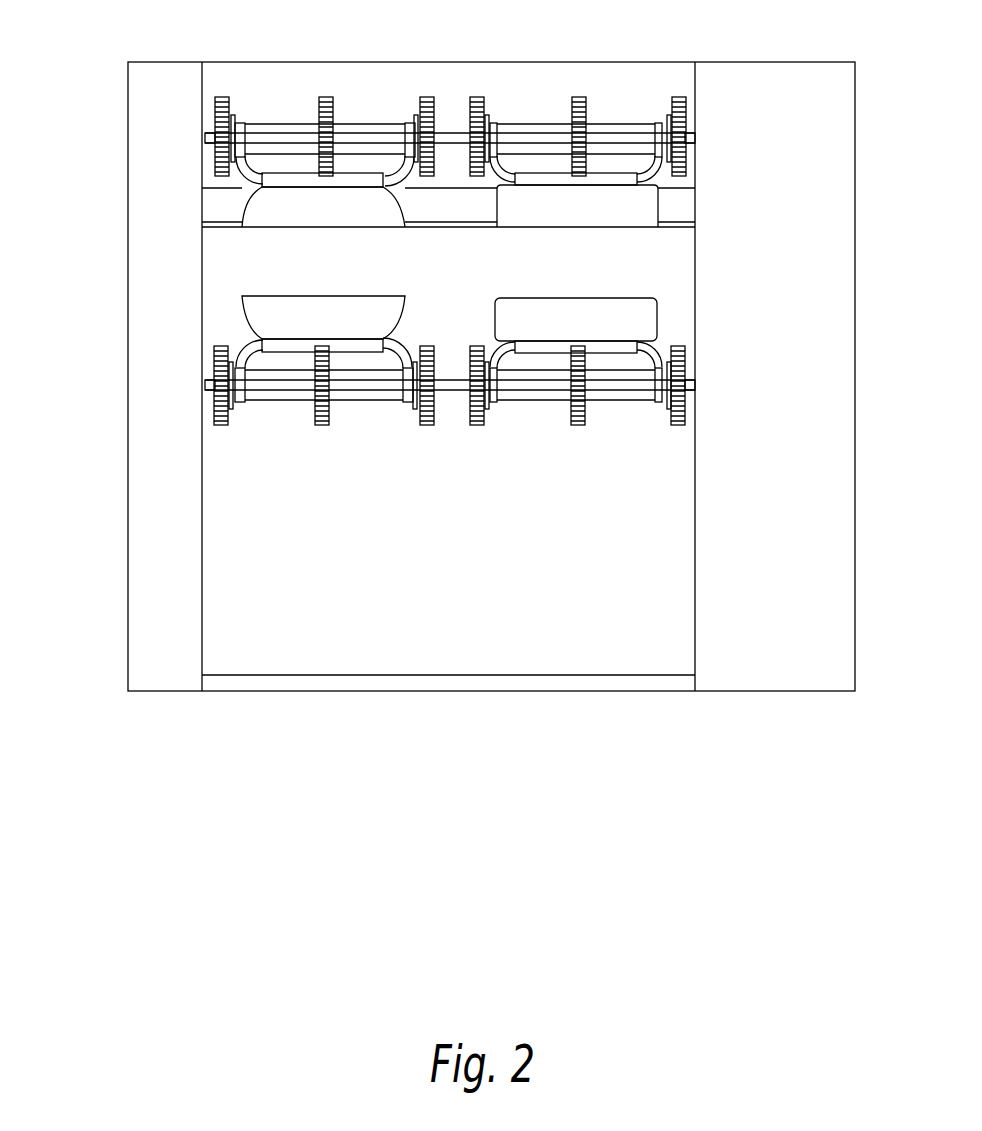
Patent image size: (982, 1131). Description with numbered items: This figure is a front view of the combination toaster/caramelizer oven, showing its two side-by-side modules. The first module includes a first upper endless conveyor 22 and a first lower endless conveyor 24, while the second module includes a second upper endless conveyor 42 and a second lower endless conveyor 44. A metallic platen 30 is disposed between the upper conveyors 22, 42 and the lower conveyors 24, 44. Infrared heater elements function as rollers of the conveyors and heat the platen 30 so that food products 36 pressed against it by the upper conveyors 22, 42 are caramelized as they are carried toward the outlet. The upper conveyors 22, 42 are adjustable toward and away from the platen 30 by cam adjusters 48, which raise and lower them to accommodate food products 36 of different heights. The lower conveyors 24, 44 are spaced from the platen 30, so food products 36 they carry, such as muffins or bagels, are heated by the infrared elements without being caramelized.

The first upper endless conveyor 22 is at (252, 139).
The first lower endless conveyor 24 is at (280, 392).
The platen 30 is at (683, 224).
The food products 36 is at (263, 213).
The second upper endless conveyor 42 is at (537, 139).
The second lower endless conveyor 44 is at (607, 357).
The cam adjusters 48 is at (585, 415).